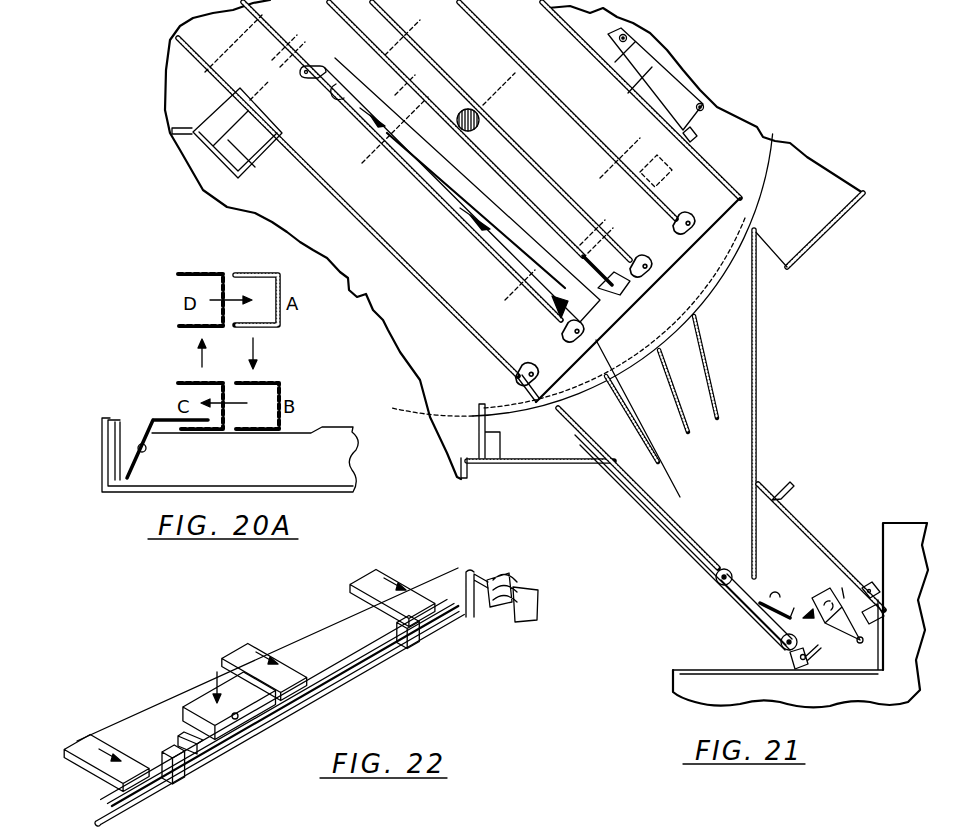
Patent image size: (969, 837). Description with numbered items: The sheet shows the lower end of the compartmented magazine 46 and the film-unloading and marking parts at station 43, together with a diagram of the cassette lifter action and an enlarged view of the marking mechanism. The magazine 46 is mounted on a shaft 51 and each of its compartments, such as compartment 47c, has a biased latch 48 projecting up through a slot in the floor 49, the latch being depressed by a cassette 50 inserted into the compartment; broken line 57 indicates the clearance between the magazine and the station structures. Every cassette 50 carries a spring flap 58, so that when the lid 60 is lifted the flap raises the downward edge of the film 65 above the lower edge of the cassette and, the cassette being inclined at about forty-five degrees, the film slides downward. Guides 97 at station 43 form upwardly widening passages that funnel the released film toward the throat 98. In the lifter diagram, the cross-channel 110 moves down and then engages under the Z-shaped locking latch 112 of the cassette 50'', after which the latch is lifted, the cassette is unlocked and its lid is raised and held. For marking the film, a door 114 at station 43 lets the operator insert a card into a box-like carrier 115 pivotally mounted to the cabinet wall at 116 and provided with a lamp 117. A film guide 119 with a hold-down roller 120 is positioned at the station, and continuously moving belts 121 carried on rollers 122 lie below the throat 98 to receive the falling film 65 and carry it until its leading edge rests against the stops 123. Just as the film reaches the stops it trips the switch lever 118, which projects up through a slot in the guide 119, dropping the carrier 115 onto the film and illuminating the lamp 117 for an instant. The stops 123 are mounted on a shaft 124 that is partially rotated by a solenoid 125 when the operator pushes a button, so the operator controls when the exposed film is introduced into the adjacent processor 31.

In FIG. 21, the biased latch 48 is at (337, 43).
In FIG. 21, the cassette 50 is at (310, 99).
In FIG. 21, the shaft 51 is at (478, 110).
In FIG. 21, the cassette-holding compartment 47c is at (480, 167).
In FIG. 21, the floor 49 is at (488, 248).
In FIG. 21, the compartmented magazine 46 is at (500, 384).
In FIG. 21, the lid 60 is at (604, 250).
In FIG. 21, the spring flap 58 is at (560, 292).
In FIG. 21, the broken line 57 is at (752, 216).
In FIG. 21, the station 43 is at (772, 383).
In FIG. 21, the guides 97 is at (630, 436).
In FIG. 21, the film 65 is at (683, 484).
In FIG. 21, the hold-down roller 120 is at (772, 588).
In FIG. 21, the throat 98 is at (737, 547).
In FIG. 21, the rollers 122 is at (705, 569).
In FIG. 21, the film guide 119 is at (720, 604).
In FIG. 22, the film guide 119 is at (302, 625).
In FIG. 21, the switch lever 118 is at (768, 641).
In FIG. 22, the switch lever 118 is at (185, 740).
In FIG. 21, the box-like carrier 115 is at (827, 590).
In FIG. 22, the box-like carrier 115 is at (195, 702).
In FIG. 21, the door 114 is at (795, 531).
In FIG. 21, the lamp 117 is at (877, 546).
In FIG. 21, the cabinet wall pivot 116 is at (882, 674).
In FIG. 21, the radiographic film processor 31 is at (906, 522).
In FIG. 20A, the cross-channel 110 is at (248, 273).
In FIG. 20A, the locking latch 112 is at (170, 420).
In FIG. 20A, the cassette 50'' is at (234, 439).
In FIG. 22, the belts 121 is at (226, 655).
In FIG. 22, the solenoid 125 is at (510, 590).
In FIG. 22, the shaft 124 is at (285, 745).
In FIG. 22, the stops 123 is at (190, 770).